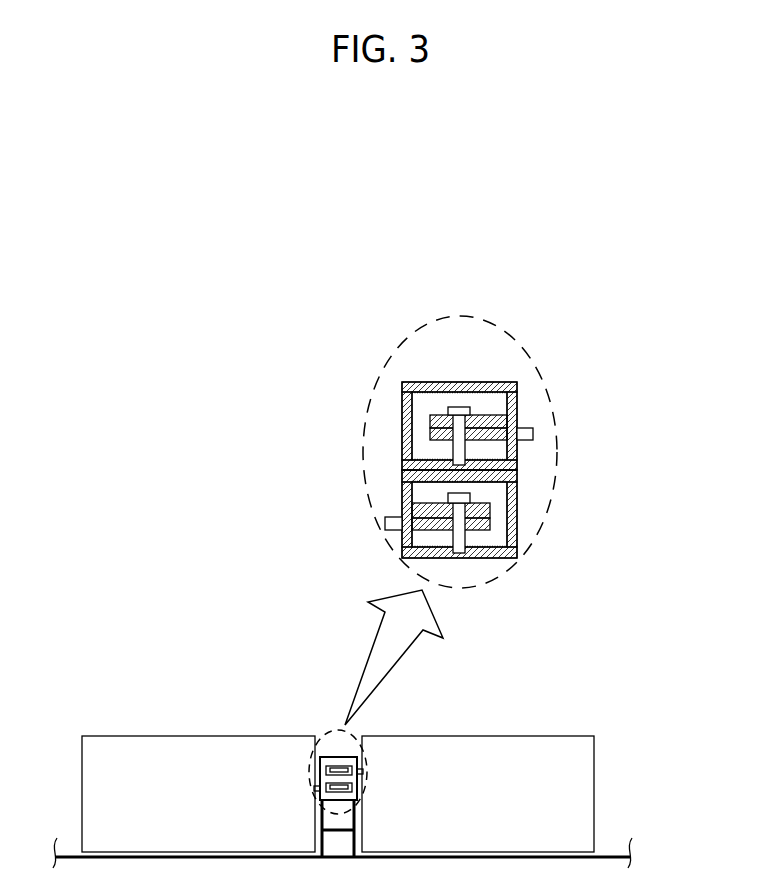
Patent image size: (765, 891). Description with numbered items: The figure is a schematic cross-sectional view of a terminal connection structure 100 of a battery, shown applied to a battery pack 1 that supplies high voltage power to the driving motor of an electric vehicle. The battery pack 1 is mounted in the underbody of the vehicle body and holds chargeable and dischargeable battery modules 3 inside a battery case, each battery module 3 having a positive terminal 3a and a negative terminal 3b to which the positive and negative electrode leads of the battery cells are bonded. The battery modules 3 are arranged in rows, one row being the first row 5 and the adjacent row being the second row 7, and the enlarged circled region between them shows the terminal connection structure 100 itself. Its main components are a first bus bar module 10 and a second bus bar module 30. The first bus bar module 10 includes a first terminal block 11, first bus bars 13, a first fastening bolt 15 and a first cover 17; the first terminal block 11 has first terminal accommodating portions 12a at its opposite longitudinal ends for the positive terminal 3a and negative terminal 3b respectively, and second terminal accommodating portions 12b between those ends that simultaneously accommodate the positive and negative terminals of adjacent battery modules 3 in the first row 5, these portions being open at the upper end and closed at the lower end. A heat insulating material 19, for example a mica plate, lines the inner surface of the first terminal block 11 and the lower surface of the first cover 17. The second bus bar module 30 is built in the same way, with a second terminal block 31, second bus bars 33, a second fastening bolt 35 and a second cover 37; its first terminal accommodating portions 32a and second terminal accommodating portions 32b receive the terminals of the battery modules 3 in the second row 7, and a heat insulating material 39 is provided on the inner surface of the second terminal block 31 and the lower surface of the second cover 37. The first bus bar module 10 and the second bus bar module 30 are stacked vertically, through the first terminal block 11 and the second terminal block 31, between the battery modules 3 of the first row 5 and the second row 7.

The battery pack 1 is at (361, 751).
The battery module 3 is at (338, 755).
The positive terminal 3a is at (405, 550).
The negative terminal 3b is at (517, 450).
The first row 5 is at (233, 718).
The second row 7 is at (548, 718).
The first bus bar module 10 is at (484, 543).
The first terminal block 11 is at (517, 528).
The first terminal accommodating portion 12a is at (598, 521).
The second terminal accommodating portion 12b is at (598, 521).
The first bus bar 13 is at (412, 508).
The first fastening bolt 15 is at (500, 558).
The first cover 17 is at (430, 478).
The heat insulating material 19 is at (517, 464).
The second bus bar module 30 is at (430, 379).
The second terminal block 31 is at (517, 392).
The first terminal accommodating portion 32a is at (327, 410).
The second terminal accommodating portion 32b is at (402, 403).
The second bus bar 33 is at (430, 421).
The second fastening bolt 35 is at (430, 435).
The second cover 37 is at (478, 385).
The heat insulating material 39 is at (432, 385).
The terminal connection structure 100 is at (181, 285).